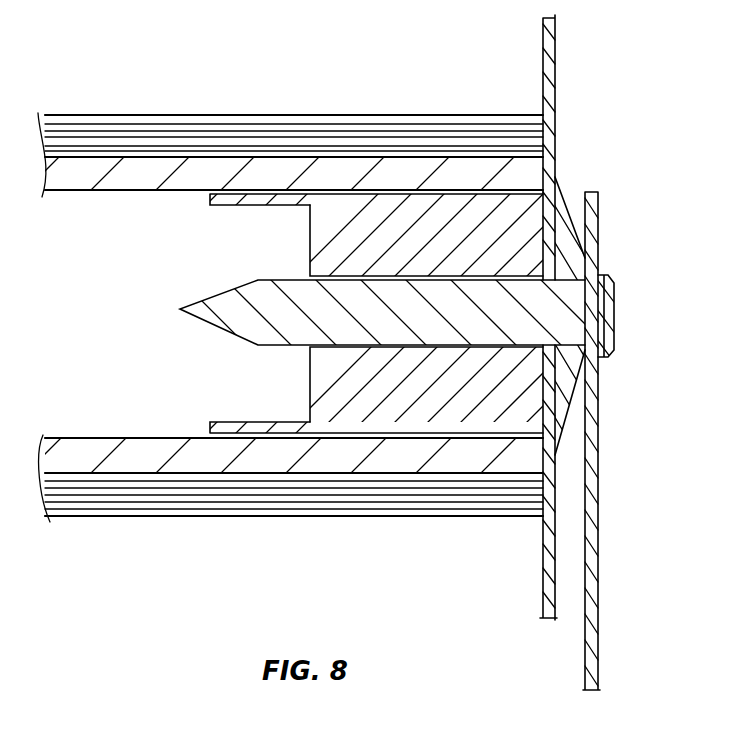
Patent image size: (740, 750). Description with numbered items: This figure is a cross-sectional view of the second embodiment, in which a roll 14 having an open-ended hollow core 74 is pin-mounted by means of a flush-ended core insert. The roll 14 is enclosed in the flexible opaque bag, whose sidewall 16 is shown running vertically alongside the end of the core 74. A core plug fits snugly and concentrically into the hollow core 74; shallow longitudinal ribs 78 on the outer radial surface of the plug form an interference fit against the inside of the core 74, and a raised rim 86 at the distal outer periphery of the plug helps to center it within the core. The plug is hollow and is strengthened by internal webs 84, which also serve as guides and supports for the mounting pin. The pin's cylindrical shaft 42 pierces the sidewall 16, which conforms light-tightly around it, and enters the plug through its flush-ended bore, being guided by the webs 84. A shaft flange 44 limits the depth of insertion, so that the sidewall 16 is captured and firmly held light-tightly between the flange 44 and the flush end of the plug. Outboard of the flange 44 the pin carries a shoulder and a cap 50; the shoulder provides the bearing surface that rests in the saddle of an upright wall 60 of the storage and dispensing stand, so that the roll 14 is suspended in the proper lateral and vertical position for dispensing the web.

The roll 14 is at (128, 143).
The sidewall 16 is at (557, 62).
The cylindrical shaft 42 is at (253, 293).
The shaft flange 44 is at (565, 233).
The cap 50 is at (610, 305).
The upright wall 60 is at (598, 572).
The open-ended hollow core 74 is at (122, 182).
The longitudinal ribs 78 is at (372, 192).
The internal webs 84 is at (445, 205).
The raised rim 86 is at (545, 432).